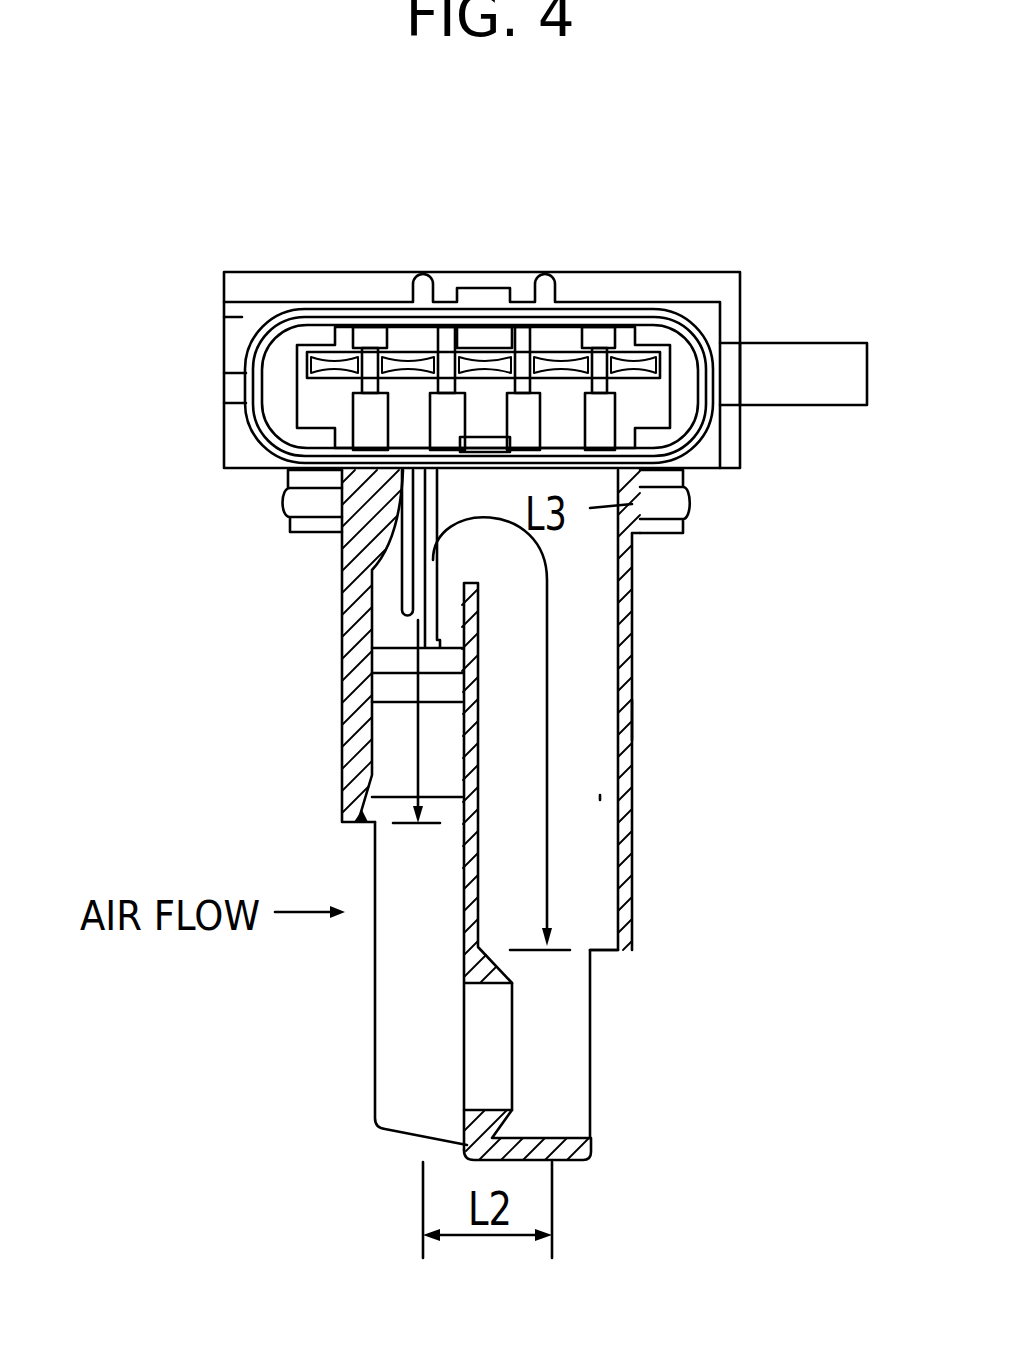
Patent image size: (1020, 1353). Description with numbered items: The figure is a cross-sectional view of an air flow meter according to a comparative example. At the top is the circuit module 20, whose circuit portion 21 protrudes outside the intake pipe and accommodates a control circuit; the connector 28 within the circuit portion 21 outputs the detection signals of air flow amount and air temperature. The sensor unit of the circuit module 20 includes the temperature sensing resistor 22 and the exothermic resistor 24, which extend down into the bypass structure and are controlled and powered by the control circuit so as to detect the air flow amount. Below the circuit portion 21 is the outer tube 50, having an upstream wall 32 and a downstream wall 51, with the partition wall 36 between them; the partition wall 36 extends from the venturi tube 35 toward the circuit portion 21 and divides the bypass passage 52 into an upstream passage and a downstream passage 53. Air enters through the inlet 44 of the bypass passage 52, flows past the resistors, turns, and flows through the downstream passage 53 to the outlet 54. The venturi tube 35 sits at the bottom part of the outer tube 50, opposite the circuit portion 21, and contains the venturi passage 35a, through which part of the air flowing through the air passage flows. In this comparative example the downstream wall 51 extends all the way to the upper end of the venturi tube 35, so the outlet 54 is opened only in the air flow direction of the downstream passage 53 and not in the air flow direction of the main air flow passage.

The circuit module 20 is at (625, 261).
The circuit portion 21 is at (373, 272).
The connector 28 is at (258, 320).
The temperature sensing resistor 22 is at (396, 604).
The exothermic resistor 24 is at (412, 634).
The upstream wall 32 is at (342, 617).
The partition wall 36 is at (462, 872).
The inlet 44 is at (405, 988).
The venturi tube 35 is at (568, 1162).
The venturi passage 35a is at (472, 1057).
The outer tube 50 is at (650, 596).
The downstream wall 51 is at (635, 722).
The bypass passage 52 is at (664, 507).
The downstream passage 53 is at (600, 795).
The outlet 54 is at (572, 940).